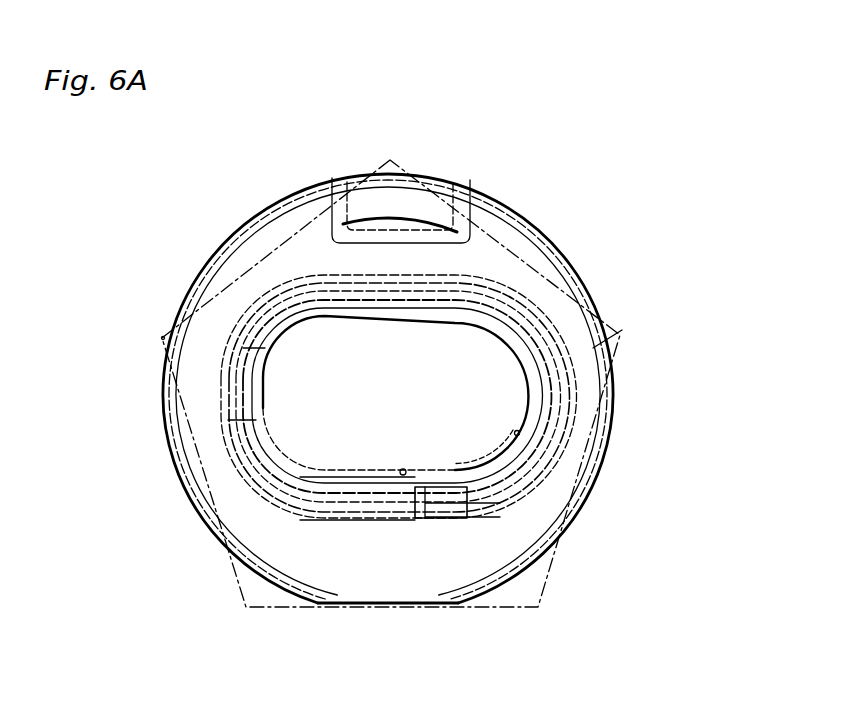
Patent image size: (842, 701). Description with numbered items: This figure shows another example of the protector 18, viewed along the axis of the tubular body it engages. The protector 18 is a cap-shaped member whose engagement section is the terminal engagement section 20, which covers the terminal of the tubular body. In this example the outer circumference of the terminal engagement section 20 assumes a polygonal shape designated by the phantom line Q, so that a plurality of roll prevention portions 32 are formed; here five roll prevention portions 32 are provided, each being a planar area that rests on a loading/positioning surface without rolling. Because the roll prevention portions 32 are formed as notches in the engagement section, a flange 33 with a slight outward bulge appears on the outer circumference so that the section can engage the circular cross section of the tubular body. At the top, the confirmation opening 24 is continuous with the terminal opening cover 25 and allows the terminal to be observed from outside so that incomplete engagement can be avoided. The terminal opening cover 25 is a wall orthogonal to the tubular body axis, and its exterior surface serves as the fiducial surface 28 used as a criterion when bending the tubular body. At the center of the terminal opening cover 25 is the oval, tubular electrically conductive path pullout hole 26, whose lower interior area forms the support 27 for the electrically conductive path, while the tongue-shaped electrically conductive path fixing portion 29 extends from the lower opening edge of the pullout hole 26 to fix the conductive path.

The protector 18 is at (605, 220).
The terminal engagement section 20 is at (593, 348).
The confirmation opening 24 is at (448, 193).
The terminal opening cover 25 is at (237, 290).
The electrically conductive path pullout hole 26 is at (520, 343).
The support 27 is at (480, 473).
The fiducial surface 28 is at (207, 309).
The electrically conductive path fixing portion 29 is at (256, 452).
The roll prevention portion 32 is at (268, 252).
The flange 33 is at (580, 522).
The phantom line Q is at (165, 323).